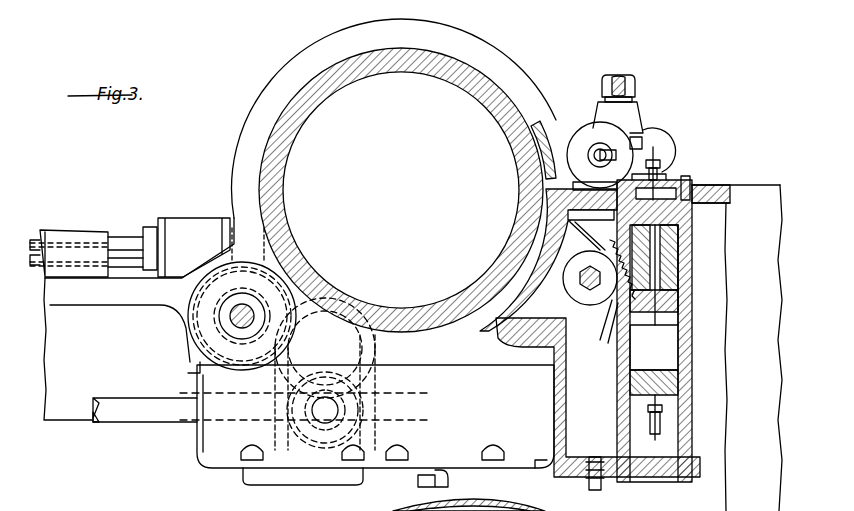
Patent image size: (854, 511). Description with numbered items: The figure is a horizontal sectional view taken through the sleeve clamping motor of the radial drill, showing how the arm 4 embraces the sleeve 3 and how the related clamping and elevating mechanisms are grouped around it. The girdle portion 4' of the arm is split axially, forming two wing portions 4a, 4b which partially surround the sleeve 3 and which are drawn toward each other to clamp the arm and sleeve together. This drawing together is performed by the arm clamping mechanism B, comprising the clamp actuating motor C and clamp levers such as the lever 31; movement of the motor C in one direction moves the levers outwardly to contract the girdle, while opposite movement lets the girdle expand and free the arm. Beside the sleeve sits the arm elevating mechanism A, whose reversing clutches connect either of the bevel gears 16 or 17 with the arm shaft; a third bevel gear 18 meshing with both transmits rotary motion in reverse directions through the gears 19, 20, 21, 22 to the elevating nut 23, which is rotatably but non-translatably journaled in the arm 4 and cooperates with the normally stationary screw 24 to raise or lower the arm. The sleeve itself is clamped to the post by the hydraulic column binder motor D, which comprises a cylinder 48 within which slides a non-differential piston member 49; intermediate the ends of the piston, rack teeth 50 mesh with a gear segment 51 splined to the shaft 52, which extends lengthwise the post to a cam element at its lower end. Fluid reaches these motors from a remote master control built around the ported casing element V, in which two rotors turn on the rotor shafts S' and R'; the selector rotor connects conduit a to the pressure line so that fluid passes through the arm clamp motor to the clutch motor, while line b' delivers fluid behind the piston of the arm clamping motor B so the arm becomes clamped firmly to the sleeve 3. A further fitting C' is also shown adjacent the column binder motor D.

The sleeve 3 is at (282, 178).
The arm 4 is at (139, 319).
The girdle portion 4' is at (395, 118).
The wing portion 4a is at (545, 158).
The wing portion 4b is at (540, 208).
The bevel gear 16 is at (292, 468).
The bevel gear 17 is at (378, 442).
The third bevel gear 18 is at (276, 433).
The gear 19 is at (322, 430).
The gear 20 is at (368, 351).
The gear 21 is at (350, 345).
The gear 22 is at (242, 299).
The elevating nut 23 is at (219, 313).
The screw 24 is at (240, 318).
The clamp lever 31 is at (618, 76).
The cylinder 48 is at (654, 347).
The piston member 49 is at (682, 300).
The rack teeth 50 is at (624, 244).
The gear segment 51 is at (609, 312).
The shaft 52 is at (587, 305).
The arm elevating mechanism A is at (262, 370).
The arm clamping mechanism B is at (640, 120).
The clamp actuating motor C is at (669, 163).
The bolt C' is at (654, 434).
The column binder motor D is at (692, 353).
The rotor shaft S' is at (68, 236).
The rotor shaft R' is at (132, 233).
The ported casing element V is at (186, 222).
The conduit a is at (642, 140).
The line b' is at (598, 146).